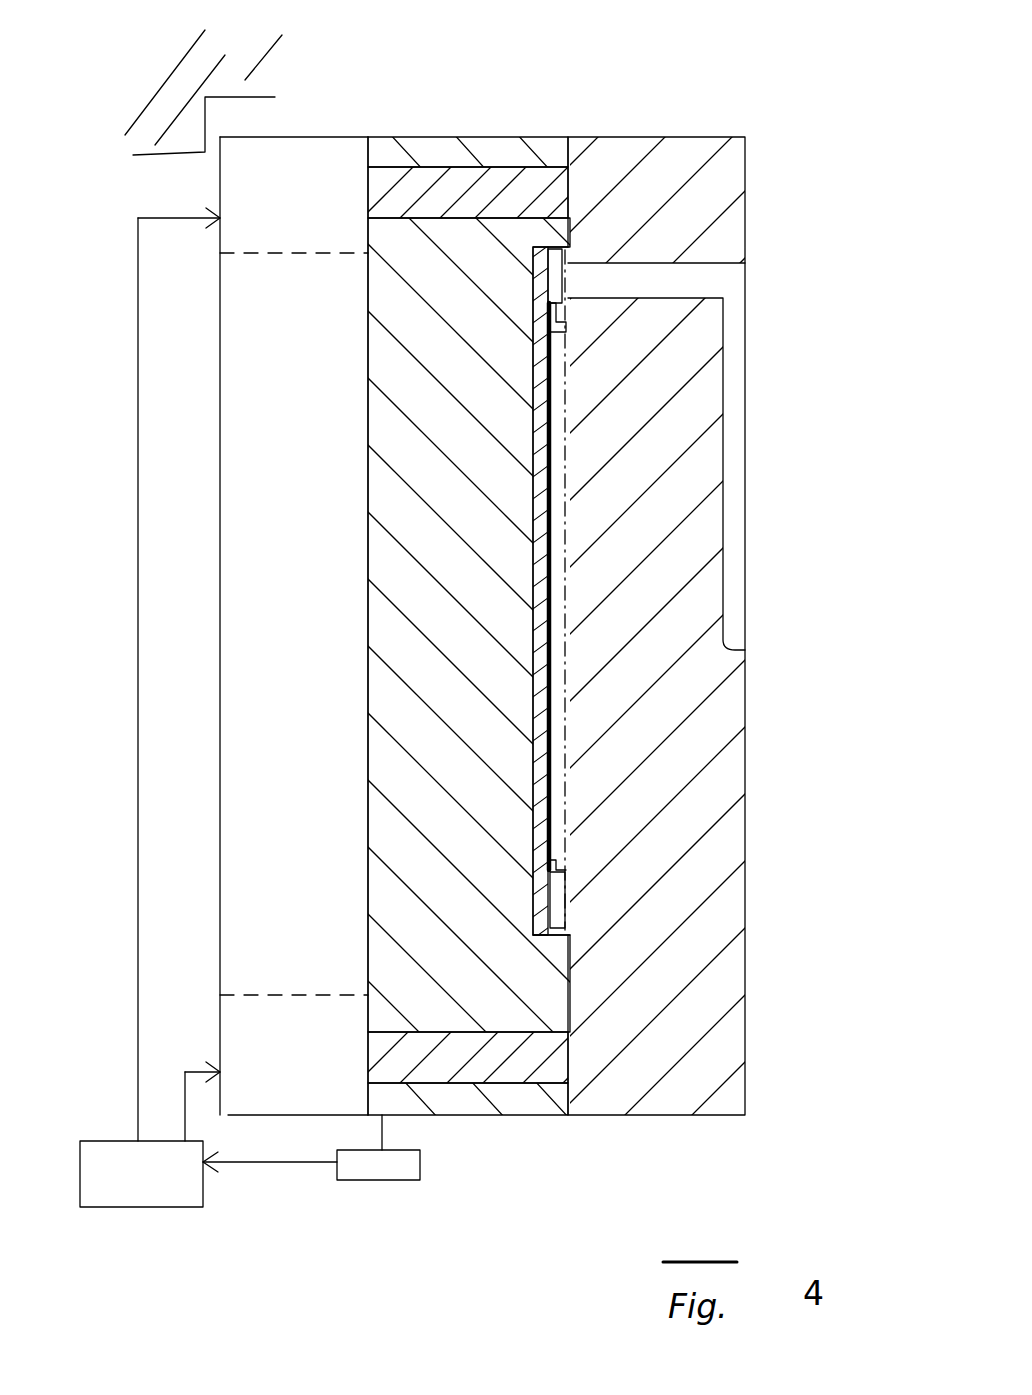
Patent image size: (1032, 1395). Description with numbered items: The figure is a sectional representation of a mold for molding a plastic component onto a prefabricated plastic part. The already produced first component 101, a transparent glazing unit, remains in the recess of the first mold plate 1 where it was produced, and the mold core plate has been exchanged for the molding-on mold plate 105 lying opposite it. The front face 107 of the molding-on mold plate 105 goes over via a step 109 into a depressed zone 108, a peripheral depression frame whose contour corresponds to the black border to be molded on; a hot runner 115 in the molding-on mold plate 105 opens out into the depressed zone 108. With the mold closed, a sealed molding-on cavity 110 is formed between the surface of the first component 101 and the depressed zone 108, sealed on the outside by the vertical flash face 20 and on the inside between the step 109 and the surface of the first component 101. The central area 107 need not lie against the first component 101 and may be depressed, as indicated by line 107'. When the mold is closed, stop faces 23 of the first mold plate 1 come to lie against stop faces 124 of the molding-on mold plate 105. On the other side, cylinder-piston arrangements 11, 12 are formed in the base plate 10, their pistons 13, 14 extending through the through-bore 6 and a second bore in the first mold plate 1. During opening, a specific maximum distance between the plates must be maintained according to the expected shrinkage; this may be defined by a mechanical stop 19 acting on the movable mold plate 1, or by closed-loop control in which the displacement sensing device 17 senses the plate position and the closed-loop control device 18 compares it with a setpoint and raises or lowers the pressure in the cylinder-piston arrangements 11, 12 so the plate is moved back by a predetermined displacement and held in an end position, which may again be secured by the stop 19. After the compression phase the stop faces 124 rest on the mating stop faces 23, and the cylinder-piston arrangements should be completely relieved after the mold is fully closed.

The first mold plate 1 is at (390, 618).
The through-bore 6 is at (535, 1115).
The base plate 10 is at (240, 719).
The cylinder-piston arrangement 11 is at (325, 1082).
The cylinder-piston arrangement 12 is at (306, 218).
The piston 13 is at (453, 1098).
The piston 14 is at (452, 180).
The displacement sensing device 17 is at (375, 1182).
The closed-loop control device 18 is at (208, 1174).
The mechanical stop 19 is at (212, 133).
The vertical flash face 20 is at (545, 238).
The stop faces 23 is at (562, 152).
The first component 101 is at (545, 668).
The molding-on mold plate 105 is at (730, 828).
The front face 107 is at (598, 586).
The line of depressed central area 107' is at (614, 590).
The depressed zone 108 is at (568, 288).
The step 109 is at (565, 305).
The molding-on cavity 110 is at (577, 175).
The hot runner 115 is at (745, 196).
The stop faces 124 is at (595, 137).